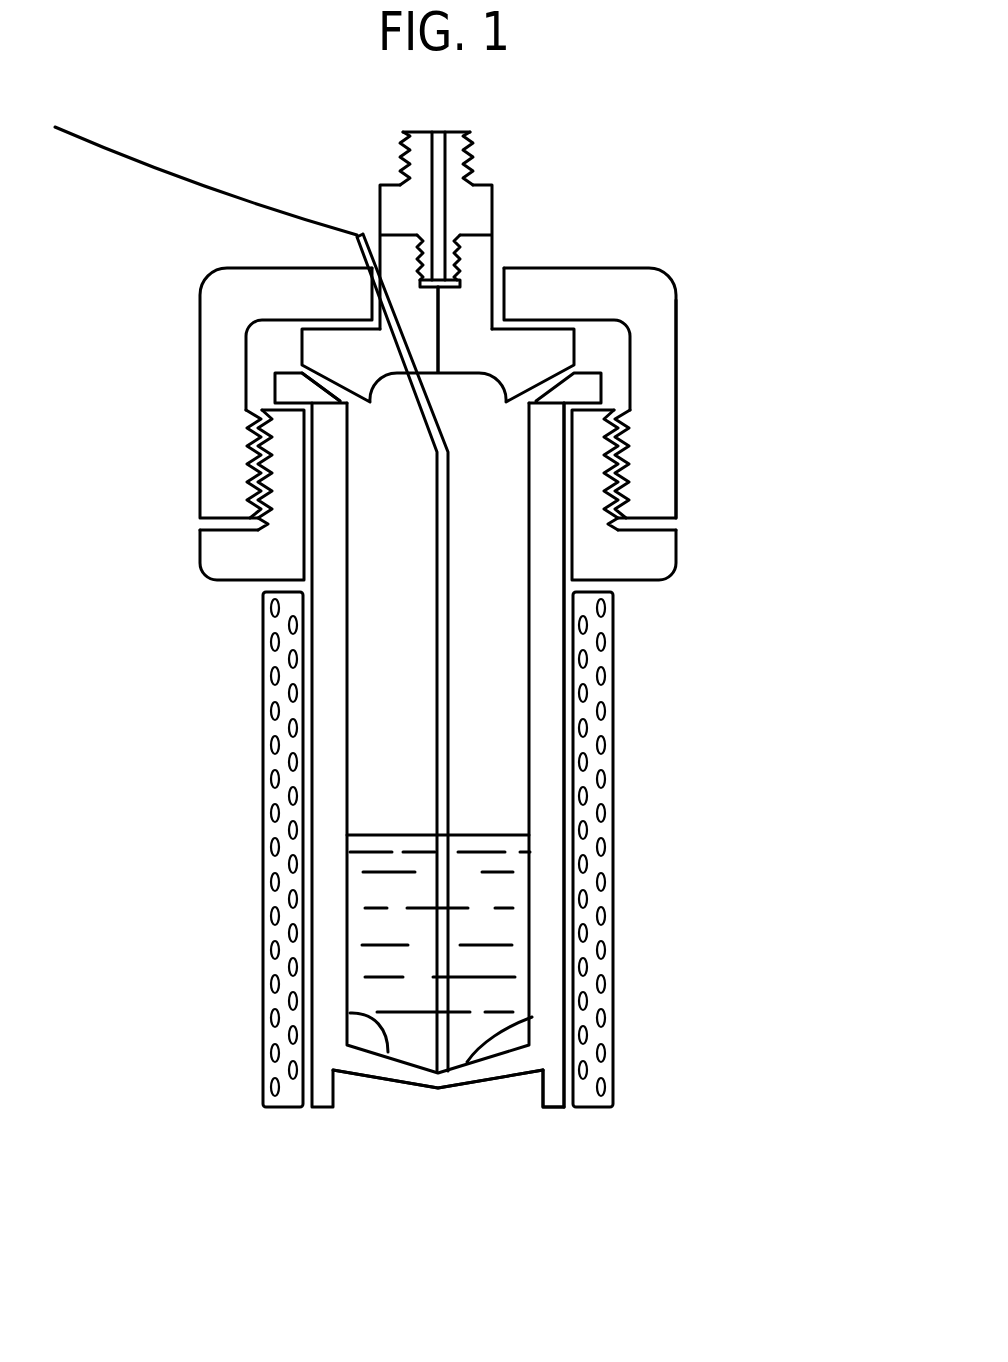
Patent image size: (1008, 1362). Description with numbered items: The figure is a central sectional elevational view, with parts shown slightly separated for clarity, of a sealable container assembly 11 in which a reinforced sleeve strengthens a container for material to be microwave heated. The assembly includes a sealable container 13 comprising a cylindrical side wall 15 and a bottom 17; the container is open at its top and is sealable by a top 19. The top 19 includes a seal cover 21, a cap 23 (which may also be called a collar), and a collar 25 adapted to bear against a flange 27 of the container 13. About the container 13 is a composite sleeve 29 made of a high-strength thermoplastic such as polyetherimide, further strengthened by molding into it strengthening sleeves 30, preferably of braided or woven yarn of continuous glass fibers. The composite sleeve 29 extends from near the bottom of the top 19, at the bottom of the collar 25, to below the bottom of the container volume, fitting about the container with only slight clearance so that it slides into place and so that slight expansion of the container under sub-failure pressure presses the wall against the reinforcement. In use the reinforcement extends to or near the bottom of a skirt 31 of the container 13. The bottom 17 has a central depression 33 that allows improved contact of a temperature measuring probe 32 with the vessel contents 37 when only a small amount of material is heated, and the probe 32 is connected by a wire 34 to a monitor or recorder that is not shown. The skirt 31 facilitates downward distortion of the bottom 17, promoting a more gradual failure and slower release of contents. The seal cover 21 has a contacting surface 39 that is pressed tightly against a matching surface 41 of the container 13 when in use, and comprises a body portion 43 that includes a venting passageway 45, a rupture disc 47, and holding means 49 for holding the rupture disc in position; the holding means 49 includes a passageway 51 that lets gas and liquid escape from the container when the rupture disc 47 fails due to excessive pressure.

The sealable container assembly 11 is at (646, 606).
The sealable container 13 is at (258, 588).
The cylindrical side wall 15 is at (565, 790).
The bottom 17 is at (370, 1076).
The top 19 is at (688, 265).
The seal cover 21 is at (494, 250).
The cap 23 is at (680, 370).
The collar 25 is at (678, 550).
The flange 27 is at (275, 387).
The composite sleeve 29 is at (268, 905).
The strengthening sleeves 30 is at (585, 967).
The skirt 31 is at (540, 1092).
The temperature measuring probe 32 is at (532, 1017).
The depression 33 is at (350, 1013).
The wire 34 is at (182, 187).
The vessel contents 37 is at (493, 923).
The contacting surface 39 is at (548, 372).
The matching surface 41 is at (337, 401).
The body portion 43 is at (327, 342).
The venting passageway 45 is at (443, 316).
The rupture disc 47 is at (452, 272).
The holding means 49 is at (494, 190).
The passageway 51 is at (452, 145).